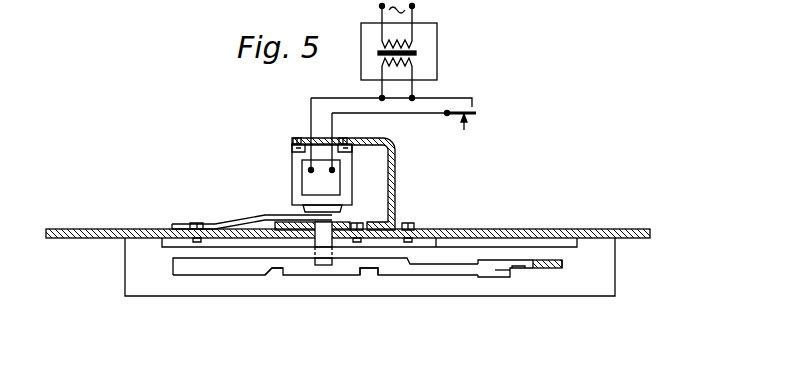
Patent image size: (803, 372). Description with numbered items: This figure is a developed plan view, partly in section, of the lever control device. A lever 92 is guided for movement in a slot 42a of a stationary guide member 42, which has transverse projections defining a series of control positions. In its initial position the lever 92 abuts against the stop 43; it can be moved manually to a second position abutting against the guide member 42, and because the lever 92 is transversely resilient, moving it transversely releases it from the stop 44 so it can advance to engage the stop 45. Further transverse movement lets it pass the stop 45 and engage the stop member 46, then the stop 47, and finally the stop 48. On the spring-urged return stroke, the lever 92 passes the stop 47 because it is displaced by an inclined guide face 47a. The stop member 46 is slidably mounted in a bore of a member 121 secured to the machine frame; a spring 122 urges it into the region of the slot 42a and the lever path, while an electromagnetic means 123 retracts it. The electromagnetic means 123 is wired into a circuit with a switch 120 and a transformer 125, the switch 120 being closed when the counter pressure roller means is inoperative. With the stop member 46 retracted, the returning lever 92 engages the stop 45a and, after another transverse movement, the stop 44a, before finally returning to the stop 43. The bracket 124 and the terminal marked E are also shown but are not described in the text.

The stationary guide member 42 is at (422, 290).
The slot 42a is at (500, 270).
The stop 43 is at (562, 270).
The stop 44 is at (478, 268).
The stop 44a is at (520, 268).
The stop 45 is at (378, 274).
The stop 45a is at (440, 236).
The stop member 46 is at (332, 265).
The stop 47 is at (283, 268).
The inclined guide face 47a is at (265, 272).
The stop 48 is at (172, 275).
The lever 92 is at (535, 270).
The switch 120 is at (472, 104).
The member 121 is at (352, 222).
The spring 122 is at (253, 218).
The electromagnetic means 123 is at (296, 160).
The mounting bracket 124 is at (398, 155).
The transformer 125 is at (428, 40).
The terminal E is at (462, 142).